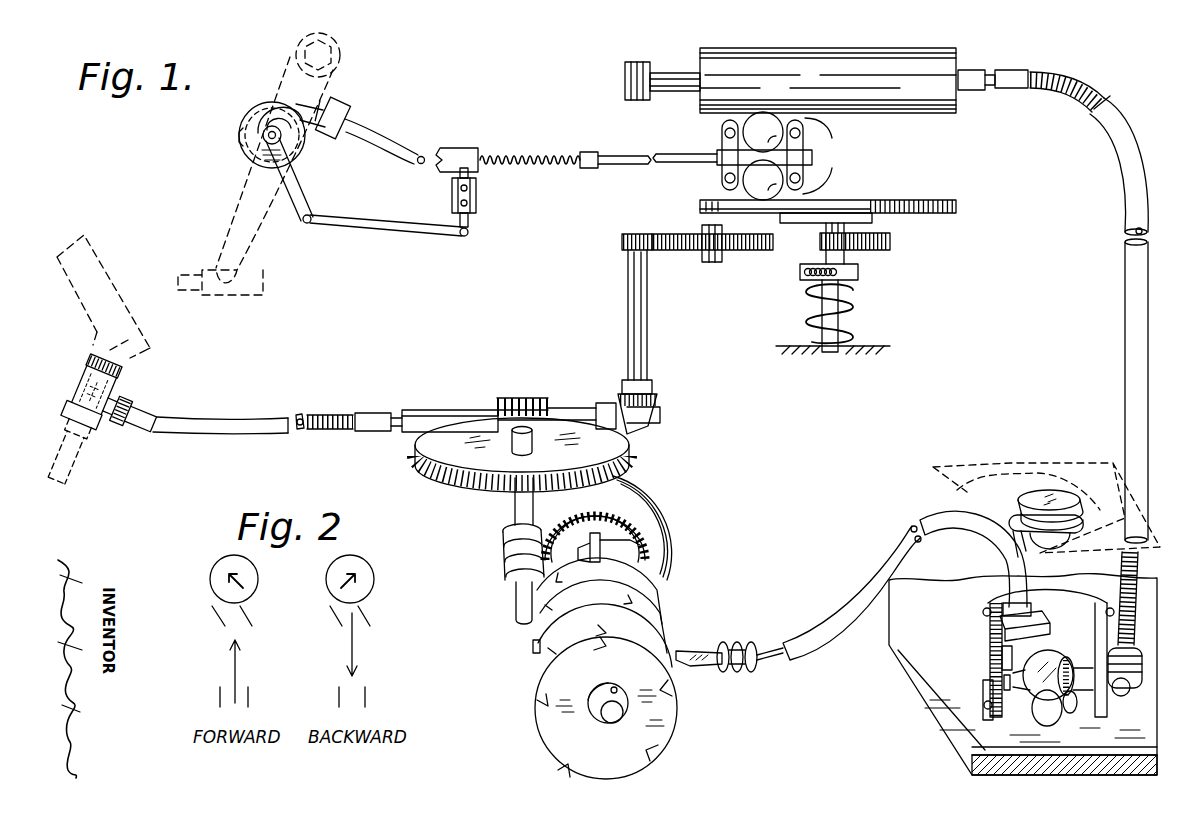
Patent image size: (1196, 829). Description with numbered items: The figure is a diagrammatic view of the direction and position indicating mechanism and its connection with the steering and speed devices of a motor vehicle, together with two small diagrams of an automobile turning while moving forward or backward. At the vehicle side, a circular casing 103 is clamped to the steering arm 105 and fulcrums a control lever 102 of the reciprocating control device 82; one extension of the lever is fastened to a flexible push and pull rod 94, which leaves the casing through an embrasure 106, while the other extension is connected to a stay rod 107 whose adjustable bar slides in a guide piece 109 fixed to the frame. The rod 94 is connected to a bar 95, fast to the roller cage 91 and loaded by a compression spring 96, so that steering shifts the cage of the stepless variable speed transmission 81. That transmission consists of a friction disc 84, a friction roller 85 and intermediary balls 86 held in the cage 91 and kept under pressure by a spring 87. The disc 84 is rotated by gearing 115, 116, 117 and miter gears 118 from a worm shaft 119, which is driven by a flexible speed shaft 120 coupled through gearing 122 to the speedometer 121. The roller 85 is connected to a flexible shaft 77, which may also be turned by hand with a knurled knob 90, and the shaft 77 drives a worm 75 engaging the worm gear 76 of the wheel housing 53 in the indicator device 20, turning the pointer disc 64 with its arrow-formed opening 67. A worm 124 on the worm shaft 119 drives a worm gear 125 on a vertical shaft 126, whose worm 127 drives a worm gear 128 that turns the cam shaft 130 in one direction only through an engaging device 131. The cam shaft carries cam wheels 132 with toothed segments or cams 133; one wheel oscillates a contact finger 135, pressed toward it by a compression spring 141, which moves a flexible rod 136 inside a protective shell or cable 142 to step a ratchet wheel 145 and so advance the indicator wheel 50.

The indicator device 20 is at (976, 621).
The hardened steel wheel 50 is at (1052, 660).
The wheel housing 53 is at (990, 648).
The pointer disc 64 is at (1080, 500).
The arrow-formed opening 67 is at (1050, 492).
The worm 75 is at (1142, 662).
The worm gear 76 is at (984, 676).
The flexible shaft 77 is at (1124, 340).
The stepless variable speed transmission 81 is at (946, 160).
The reciprocating control device 82 is at (386, 238).
The friction disc 84 is at (957, 209).
The friction roller 85 is at (860, 50).
The intermediary balls 86 is at (785, 156).
The spring 87 is at (852, 322).
The knurled knob 90 is at (628, 70).
The roller cage 91 is at (720, 147).
The flexible push and pull rod 94 is at (408, 150).
The bar 95 is at (618, 166).
The compression spring 96 is at (528, 152).
The control lever 102 is at (307, 194).
The circular casing 103 is at (240, 144).
The steering arm 105 is at (236, 224).
The embrasure 106 is at (343, 120).
The stay rod 107 is at (397, 223).
The guide piece 109 is at (477, 200).
The gearing 115 is at (890, 242).
The gearing 116 is at (743, 252).
The gearing 117 is at (624, 244).
The miter gears 118 is at (612, 403).
The worm shaft 119 is at (432, 410).
The flexible speed shaft 120 is at (318, 414).
The speedometer 121 is at (93, 327).
The gearing 122 is at (99, 418).
The worm 124 is at (522, 398).
The worm gear 125 is at (440, 485).
The vertical shaft 126 is at (516, 606).
The worm 127 is at (503, 553).
The worm gear 128 is at (648, 560).
The cam shaft 130 is at (620, 722).
The engaging device 131 is at (645, 540).
The cam wheels 132 is at (552, 737).
The toothed segments or cams 133 is at (535, 696).
The contact finger 135 is at (704, 668).
The flexible rod 136 is at (770, 660).
The compression spring 141 is at (736, 642).
The protective shell or cable 142 is at (840, 612).
The ratchet wheel 145 is at (1072, 680).